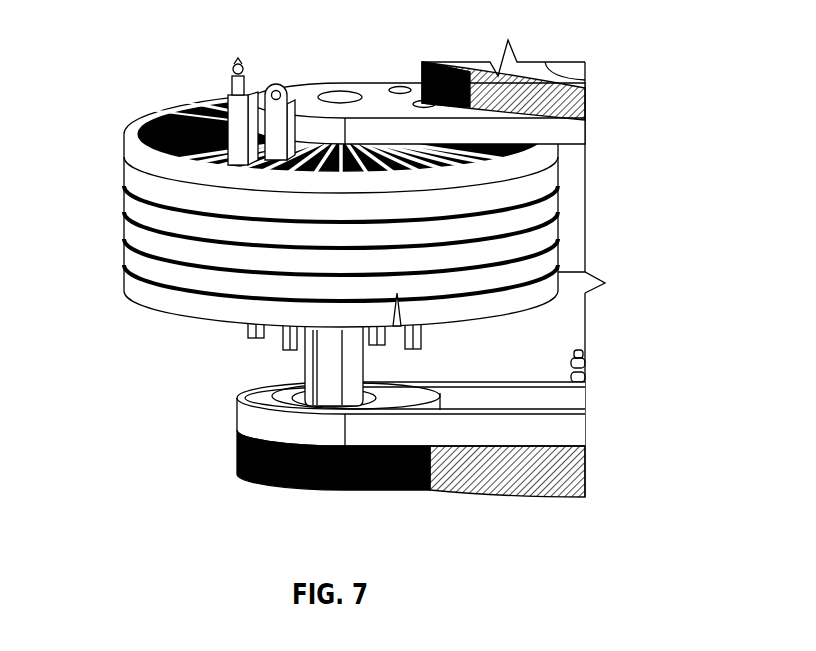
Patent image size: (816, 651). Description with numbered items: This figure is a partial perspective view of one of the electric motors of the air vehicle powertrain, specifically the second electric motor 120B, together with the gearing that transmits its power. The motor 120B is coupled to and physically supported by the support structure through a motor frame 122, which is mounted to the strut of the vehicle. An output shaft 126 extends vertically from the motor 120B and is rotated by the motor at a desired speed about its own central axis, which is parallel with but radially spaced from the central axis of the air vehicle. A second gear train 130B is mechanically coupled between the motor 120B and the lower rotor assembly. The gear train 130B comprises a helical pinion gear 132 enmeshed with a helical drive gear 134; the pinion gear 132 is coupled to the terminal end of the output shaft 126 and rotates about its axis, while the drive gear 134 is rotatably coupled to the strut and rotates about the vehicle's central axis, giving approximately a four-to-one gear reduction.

The electric motor 120B is at (136, 152).
The motor frame 122 is at (312, 85).
The output shaft 126 is at (311, 377).
The second gear train 130B is at (585, 462).
The helical pinion gear 132 is at (250, 458).
The helical drive gear 134 is at (548, 490).